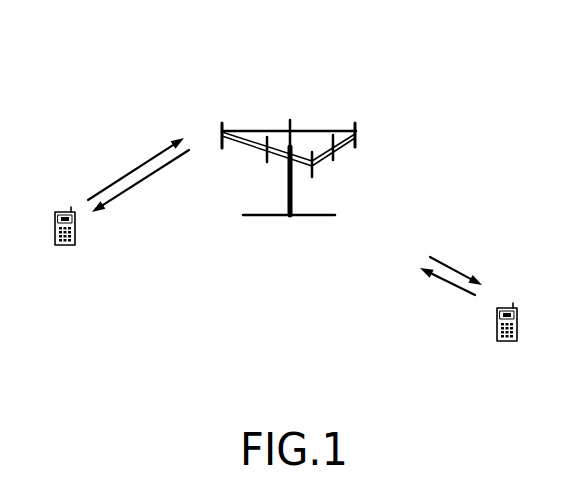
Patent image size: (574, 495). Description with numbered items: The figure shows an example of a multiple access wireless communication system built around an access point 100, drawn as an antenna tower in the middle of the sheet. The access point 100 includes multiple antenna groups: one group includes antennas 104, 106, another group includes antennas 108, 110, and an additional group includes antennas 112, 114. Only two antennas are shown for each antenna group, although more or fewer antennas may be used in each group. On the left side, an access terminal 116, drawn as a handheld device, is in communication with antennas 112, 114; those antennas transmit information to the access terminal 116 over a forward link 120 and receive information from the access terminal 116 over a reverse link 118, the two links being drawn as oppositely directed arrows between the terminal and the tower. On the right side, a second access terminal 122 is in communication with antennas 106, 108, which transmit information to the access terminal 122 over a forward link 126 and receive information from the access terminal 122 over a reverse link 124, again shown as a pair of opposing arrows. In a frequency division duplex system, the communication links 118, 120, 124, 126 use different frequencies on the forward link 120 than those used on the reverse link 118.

The access point 100 is at (270, 215).
The antenna 104 is at (312, 177).
The antenna 106 is at (337, 161).
The antenna 108 is at (365, 143).
The antenna 110 is at (292, 120).
The antenna 112 is at (224, 128).
The antenna 114 is at (267, 160).
The access terminal 116 is at (71, 207).
The reverse link 118 is at (135, 168).
The forward link 120 is at (143, 178).
The access terminal 122 is at (511, 301).
The reverse link 124 is at (438, 279).
The forward link 126 is at (459, 271).